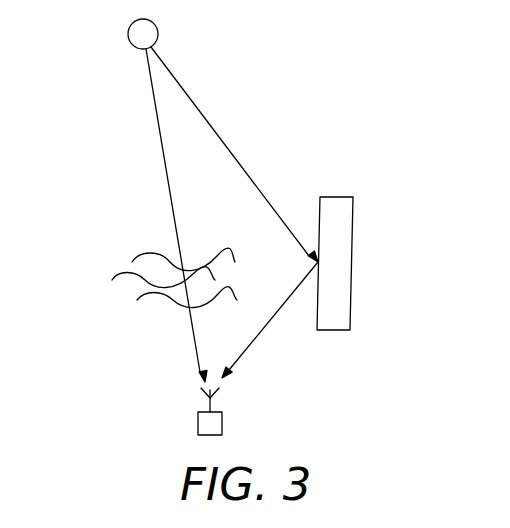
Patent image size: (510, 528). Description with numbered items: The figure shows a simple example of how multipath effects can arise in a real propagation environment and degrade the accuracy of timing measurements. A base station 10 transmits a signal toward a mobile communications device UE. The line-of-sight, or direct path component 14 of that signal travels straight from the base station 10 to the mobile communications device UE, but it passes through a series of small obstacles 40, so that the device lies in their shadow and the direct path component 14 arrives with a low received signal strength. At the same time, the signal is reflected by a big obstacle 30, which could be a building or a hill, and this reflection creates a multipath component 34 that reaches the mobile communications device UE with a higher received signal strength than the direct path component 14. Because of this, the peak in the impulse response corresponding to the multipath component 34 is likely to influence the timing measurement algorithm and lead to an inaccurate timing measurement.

The base station 10 is at (128, 34).
The direct path component 14 is at (156, 118).
The big obstacle 30 is at (353, 203).
The multipath component 34 is at (268, 325).
The small obstacles 40 is at (148, 255).
The mobile communications device UE is at (198, 425).